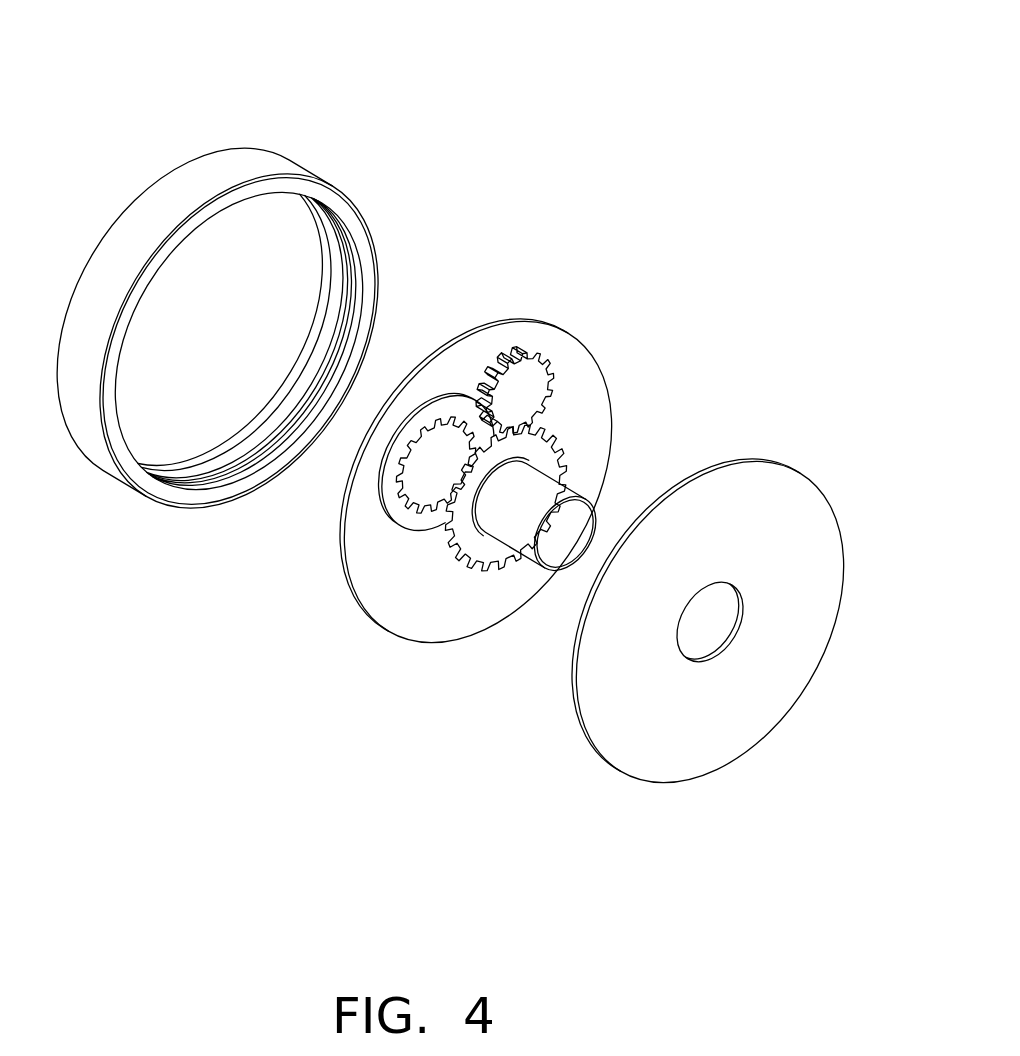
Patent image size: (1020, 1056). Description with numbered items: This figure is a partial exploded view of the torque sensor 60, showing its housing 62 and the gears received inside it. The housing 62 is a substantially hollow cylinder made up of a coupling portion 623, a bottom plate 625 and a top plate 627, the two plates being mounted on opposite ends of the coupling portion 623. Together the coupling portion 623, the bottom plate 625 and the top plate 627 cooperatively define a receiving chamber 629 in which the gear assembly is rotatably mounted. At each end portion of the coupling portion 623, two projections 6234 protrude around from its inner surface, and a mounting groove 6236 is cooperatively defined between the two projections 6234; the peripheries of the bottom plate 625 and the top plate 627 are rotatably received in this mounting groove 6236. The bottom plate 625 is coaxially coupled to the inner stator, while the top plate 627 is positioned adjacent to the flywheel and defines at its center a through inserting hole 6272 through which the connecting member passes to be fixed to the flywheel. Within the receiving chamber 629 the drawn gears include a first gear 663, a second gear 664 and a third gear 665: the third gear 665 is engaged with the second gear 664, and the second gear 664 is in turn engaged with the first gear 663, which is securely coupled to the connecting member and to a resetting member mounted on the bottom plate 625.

The torque sensor 60 is at (562, 66).
The housing 62 is at (522, 835).
The coupling portion 623 is at (107, 467).
The receiving chamber 629 is at (342, 245).
The projections 6234 is at (363, 280).
The mounting groove 6236 is at (368, 343).
The bottom plate 625 is at (427, 613).
The third gear 665 is at (450, 440).
The second gear 664 is at (530, 375).
The first gear 663 is at (548, 448).
The top plate 627 is at (653, 750).
The inserting hole 6272 is at (705, 628).